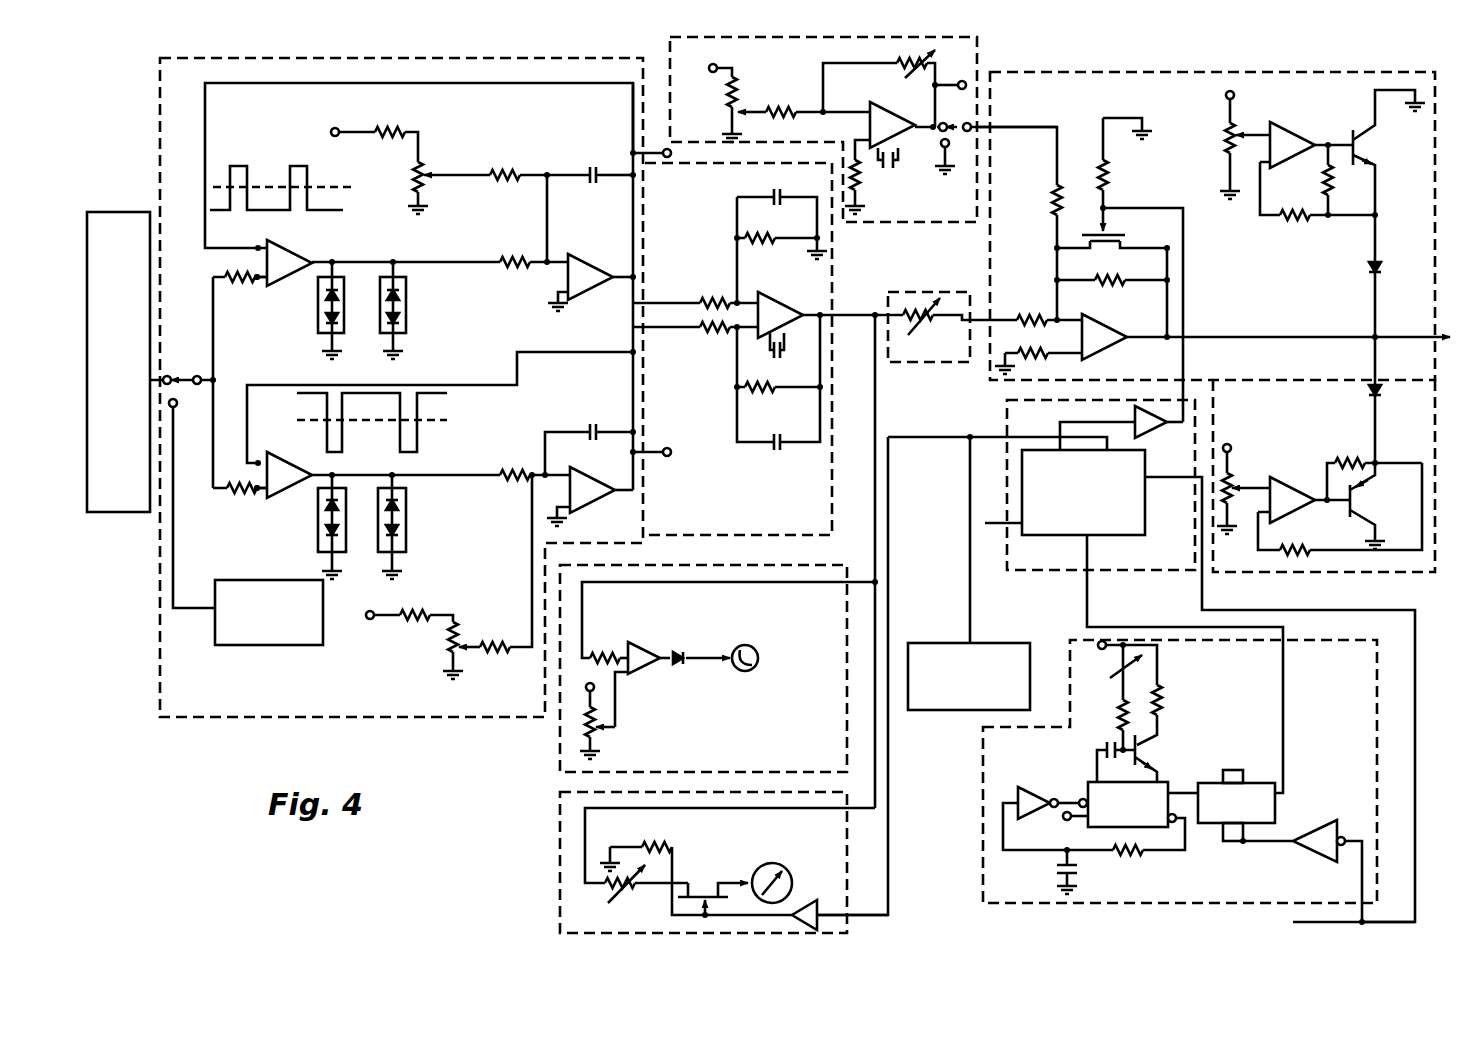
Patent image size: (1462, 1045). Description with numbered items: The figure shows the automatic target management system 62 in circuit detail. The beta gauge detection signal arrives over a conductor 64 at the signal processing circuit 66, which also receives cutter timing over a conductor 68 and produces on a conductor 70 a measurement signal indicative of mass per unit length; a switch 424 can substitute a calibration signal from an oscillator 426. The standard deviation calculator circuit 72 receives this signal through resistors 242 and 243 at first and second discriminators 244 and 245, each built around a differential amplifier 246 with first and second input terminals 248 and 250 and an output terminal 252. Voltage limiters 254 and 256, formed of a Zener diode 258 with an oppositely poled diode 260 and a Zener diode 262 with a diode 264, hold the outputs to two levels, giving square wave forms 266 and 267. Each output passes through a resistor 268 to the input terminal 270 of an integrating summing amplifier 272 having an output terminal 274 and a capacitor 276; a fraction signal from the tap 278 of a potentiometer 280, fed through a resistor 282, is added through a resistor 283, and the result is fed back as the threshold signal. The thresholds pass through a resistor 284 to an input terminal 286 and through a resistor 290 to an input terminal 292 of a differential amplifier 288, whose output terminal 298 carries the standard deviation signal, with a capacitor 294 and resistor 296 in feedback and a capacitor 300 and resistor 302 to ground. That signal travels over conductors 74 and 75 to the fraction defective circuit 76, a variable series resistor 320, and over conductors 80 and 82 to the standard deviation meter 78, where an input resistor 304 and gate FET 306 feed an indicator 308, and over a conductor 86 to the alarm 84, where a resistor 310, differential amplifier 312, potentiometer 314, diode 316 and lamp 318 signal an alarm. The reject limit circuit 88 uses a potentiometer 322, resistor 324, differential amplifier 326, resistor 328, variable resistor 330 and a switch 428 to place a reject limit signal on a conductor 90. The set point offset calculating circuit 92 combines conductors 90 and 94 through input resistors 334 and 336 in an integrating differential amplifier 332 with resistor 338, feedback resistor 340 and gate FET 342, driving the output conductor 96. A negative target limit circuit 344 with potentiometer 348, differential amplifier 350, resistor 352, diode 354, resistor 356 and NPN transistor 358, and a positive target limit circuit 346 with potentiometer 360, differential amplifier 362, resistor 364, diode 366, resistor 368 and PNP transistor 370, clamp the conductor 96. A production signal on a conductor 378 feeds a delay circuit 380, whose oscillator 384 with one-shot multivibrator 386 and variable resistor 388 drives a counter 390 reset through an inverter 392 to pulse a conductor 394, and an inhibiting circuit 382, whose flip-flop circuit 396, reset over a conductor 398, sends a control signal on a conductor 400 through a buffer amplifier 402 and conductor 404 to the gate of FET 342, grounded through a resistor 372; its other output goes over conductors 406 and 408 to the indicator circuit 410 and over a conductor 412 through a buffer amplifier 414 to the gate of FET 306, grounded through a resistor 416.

The automatic target management system 62 is at (128, 108).
The conductor 64 is at (86, 247).
The signal processing circuit 66 is at (125, 212).
The conductor 68 is at (86, 480).
The conductor 70 is at (163, 380).
The standard deviation calculator circuit 72 is at (160, 690).
The conductor 74 is at (832, 320).
The conductor 75 is at (878, 312).
The fraction defective circuit 76 is at (943, 292).
The standard deviation meter 78 is at (560, 845).
The conductor 80 is at (880, 422).
The conductor 82 is at (873, 670).
The alarm 84 is at (560, 740).
The conductor 86 is at (870, 582).
The reject limit circuit 88 is at (977, 62).
The conductor 90 is at (990, 127).
The set point offset calculating circuit 92 is at (1180, 72).
The conductor 94 is at (988, 362).
The conductor 96 is at (1440, 330).
The resistor 242 is at (222, 277).
The resistor 243 is at (228, 495).
The first discriminator 244 is at (350, 245).
The second discriminator 245 is at (352, 468).
The differential amplifier 246 is at (300, 262).
The first input terminal 248 is at (257, 282).
The second input terminal 250 is at (258, 248).
The output terminal 252 is at (338, 260).
The voltage limiter 254 is at (318, 333).
The voltage limiter 256 is at (400, 333).
The Zener diode 258 is at (326, 296).
The diode 260 is at (326, 322).
The Zener diode 262 is at (400, 320).
The diode 264 is at (400, 295).
The wave form 266 is at (308, 178).
The wave form 267 is at (430, 408).
The resistor 268 is at (514, 257).
The input terminal 270 is at (545, 268).
The integrating summing amplifier 272 is at (596, 298).
The output terminal 274 is at (640, 275).
The capacitor 276 is at (588, 168).
The tap 278 is at (440, 185).
The potentiometer 280 is at (425, 175).
The resistor 282 is at (385, 127).
The resistor 283 is at (508, 170).
The resistor 284 is at (703, 298).
The input terminal 286 is at (740, 298).
The differential amplifier 288 is at (790, 313).
The resistor 290 is at (703, 332).
The input terminal 292 is at (735, 332).
The capacitor 294 is at (772, 445).
The resistor 296 is at (765, 392).
The output terminal 298 is at (825, 315).
The capacitor 300 is at (772, 195).
The resistor 302 is at (775, 220).
The input resistor 304 is at (618, 895).
The gate FET 306 is at (708, 893).
The indicator 308 is at (772, 860).
The resistor 310 is at (600, 652).
The differential amplifier 312 is at (645, 650).
The potentiometer 314 is at (600, 740).
The diode 316 is at (680, 652).
The lamp 318 is at (755, 650).
The variable series resistor 320 is at (900, 320).
The potentiometer 322 is at (740, 90).
The fixed resistor 324 is at (790, 105).
The differential amplifier 326 is at (900, 118).
The fixed resistor 328 is at (862, 178).
The variable resistor 330 is at (900, 70).
The integrating differential amplifier 332 is at (1105, 345).
The input resistor 334 is at (1052, 200).
The input resistor 336 is at (1032, 315).
The resistor 338 is at (1025, 358).
The feedback resistor 340 is at (1110, 285).
The gate FET 342 is at (1110, 228).
The negative target limit circuit 344 is at (1325, 238).
The positive target limit circuit 346 is at (1290, 430).
The negative target reference potentiometer 348 is at (1240, 130).
The differential amplifier 350 is at (1300, 130).
The resistor 352 is at (1292, 220).
The diode 354 is at (1368, 270).
The resistor 356 is at (1322, 180).
The NPN transistor 358 is at (1352, 140).
The potentiometer 360 is at (1235, 480).
The differential amplifier 362 is at (1290, 480).
The resistor 364 is at (1295, 548).
The diode 366 is at (1368, 390).
The resistor 368 is at (1345, 458).
The PNP transistor 370 is at (1352, 513).
The resistor 372 is at (1110, 175).
The conductor 378 is at (1330, 920).
The delay circuit 380 is at (1360, 648).
The inhibiting circuit 382 is at (1098, 575).
The oscillator 384 is at (1180, 730).
The one-shot multivibrator 386 is at (1165, 772).
The variable resistor 388 is at (1115, 668).
The counter 390 is at (1278, 810).
The inverter 392 is at (1300, 852).
The conductor 394 is at (1283, 640).
The flip-flop circuit 396 is at (1010, 522).
The conductor 398 is at (1375, 600).
The output conductor 400 is at (1055, 427).
The buffer amplifier 402 is at (1148, 432).
The conductor 404 is at (1185, 363).
The conductor 406 is at (982, 437).
The conductor 408 is at (972, 590).
The indicator circuit 410 is at (932, 643).
The conductor 412 is at (890, 858).
The buffer amplifier 414 is at (812, 898).
The resistor 416 is at (650, 845).
The switch 424 is at (185, 385).
The oscillator 426 is at (240, 645).
The switch 428 is at (957, 125).